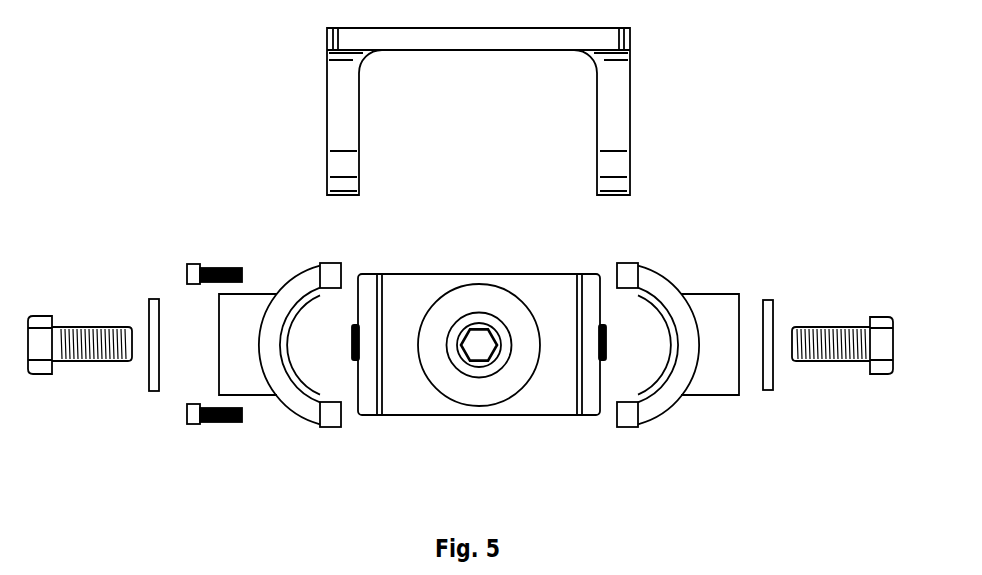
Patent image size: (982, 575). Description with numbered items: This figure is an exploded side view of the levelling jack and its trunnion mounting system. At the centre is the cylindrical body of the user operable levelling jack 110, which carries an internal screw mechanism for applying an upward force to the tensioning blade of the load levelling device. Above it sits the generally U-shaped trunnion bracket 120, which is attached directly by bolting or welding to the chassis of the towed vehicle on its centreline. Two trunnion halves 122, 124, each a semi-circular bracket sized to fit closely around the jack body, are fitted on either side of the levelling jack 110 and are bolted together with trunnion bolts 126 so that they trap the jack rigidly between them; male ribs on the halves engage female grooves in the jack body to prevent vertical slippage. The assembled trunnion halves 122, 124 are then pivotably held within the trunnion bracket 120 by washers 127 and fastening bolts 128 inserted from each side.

The levelling jack 110 is at (470, 415).
The trunnion bracket 120 is at (630, 37).
The trunnion half 122 is at (300, 276).
The trunnion half 124 is at (712, 294).
The trunnion bolts 126 is at (193, 285).
The washers 127 is at (162, 293).
The fastening bolts 128 is at (45, 316).